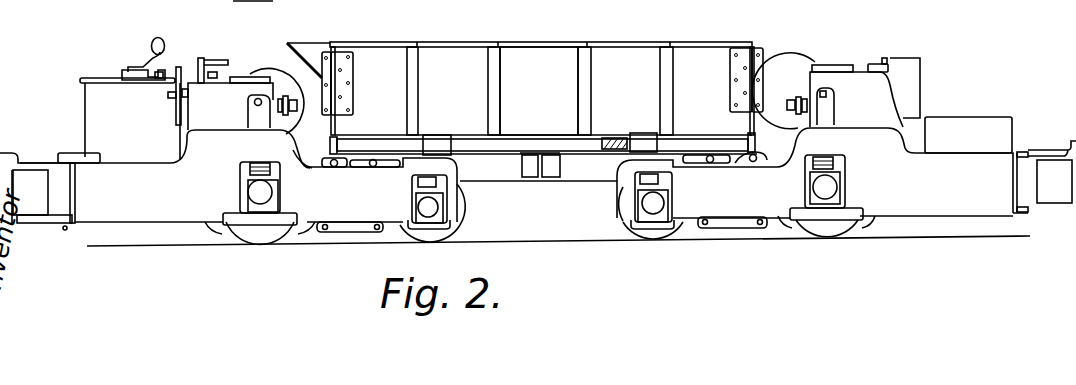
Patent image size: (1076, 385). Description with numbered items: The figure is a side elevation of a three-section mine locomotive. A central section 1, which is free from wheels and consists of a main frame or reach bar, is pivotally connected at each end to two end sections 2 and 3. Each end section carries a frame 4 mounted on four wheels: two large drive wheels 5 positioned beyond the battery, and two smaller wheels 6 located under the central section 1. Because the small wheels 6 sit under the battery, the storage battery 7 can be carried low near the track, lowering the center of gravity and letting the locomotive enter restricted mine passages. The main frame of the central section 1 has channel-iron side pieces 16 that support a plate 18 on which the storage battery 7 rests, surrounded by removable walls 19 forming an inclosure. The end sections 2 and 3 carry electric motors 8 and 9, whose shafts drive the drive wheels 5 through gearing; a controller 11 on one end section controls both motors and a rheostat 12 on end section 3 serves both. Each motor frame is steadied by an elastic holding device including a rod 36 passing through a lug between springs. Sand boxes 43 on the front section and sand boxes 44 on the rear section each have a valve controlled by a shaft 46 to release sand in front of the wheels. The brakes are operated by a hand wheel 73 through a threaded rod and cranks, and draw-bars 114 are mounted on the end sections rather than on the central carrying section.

The central section 1 is at (544, 164).
The end section 2 is at (166, 176).
The end section 3 is at (897, 172).
The frame 4 is at (548, 195).
The drive wheels 5 is at (257, 238).
The small wheels 6 is at (435, 237).
The storage battery 7 is at (440, 43).
The electric motor 8 is at (262, 72).
The electric motor 9 is at (800, 77).
The controller 11 is at (130, 99).
The rheostat 12 is at (968, 135).
The side pieces 16 is at (510, 170).
The plate 18 is at (510, 150).
The removable walls 19 is at (527, 62).
The rod 36 is at (293, 113).
The sand boxes 43 is at (230, 106).
The sand boxes 44 is at (865, 92).
The shaft 46 is at (202, 58).
The hand wheel 73 is at (175, 108).
The draw-bars 114 is at (12, 150).